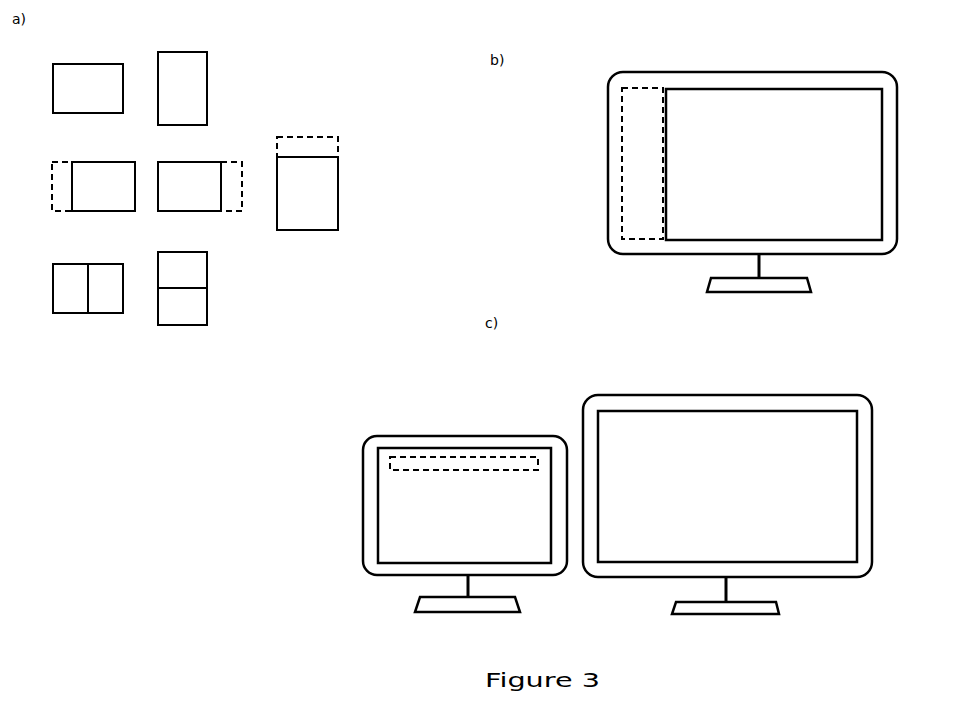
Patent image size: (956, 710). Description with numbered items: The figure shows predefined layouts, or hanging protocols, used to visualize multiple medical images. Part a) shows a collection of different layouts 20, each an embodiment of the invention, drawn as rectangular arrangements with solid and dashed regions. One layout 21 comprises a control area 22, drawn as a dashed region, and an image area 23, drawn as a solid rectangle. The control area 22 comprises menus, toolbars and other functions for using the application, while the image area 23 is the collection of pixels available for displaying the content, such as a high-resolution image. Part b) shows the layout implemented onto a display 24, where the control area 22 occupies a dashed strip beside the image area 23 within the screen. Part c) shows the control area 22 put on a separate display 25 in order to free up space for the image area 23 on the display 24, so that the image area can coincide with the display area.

The collection of different layouts 20 is at (258, 78).
The layout 21 is at (89, 212).
The control area 22 is at (61, 162).
The image area 23 is at (122, 162).
The display 24 is at (896, 112).
The separate display 25 is at (364, 477).